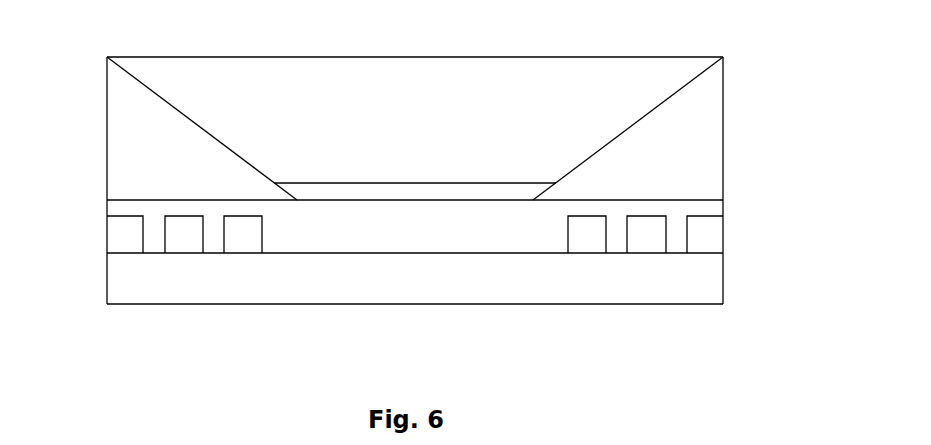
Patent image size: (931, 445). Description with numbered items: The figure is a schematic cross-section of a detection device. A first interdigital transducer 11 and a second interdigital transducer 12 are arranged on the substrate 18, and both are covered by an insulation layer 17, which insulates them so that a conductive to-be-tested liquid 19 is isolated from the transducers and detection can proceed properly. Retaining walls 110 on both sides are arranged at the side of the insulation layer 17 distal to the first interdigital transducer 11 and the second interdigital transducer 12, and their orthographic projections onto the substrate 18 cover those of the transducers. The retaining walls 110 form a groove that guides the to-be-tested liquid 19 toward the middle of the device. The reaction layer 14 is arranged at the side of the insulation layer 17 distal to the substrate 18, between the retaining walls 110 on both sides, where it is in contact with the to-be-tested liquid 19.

The retaining walls 110 is at (140, 153).
The to-be-tested liquid 19 is at (553, 113).
The reaction layer 14 is at (426, 193).
The insulation layer 17 is at (419, 241).
The first interdigital transducer 11 is at (127, 235).
The second interdigital transducer 12 is at (703, 229).
The substrate 18 is at (679, 279).